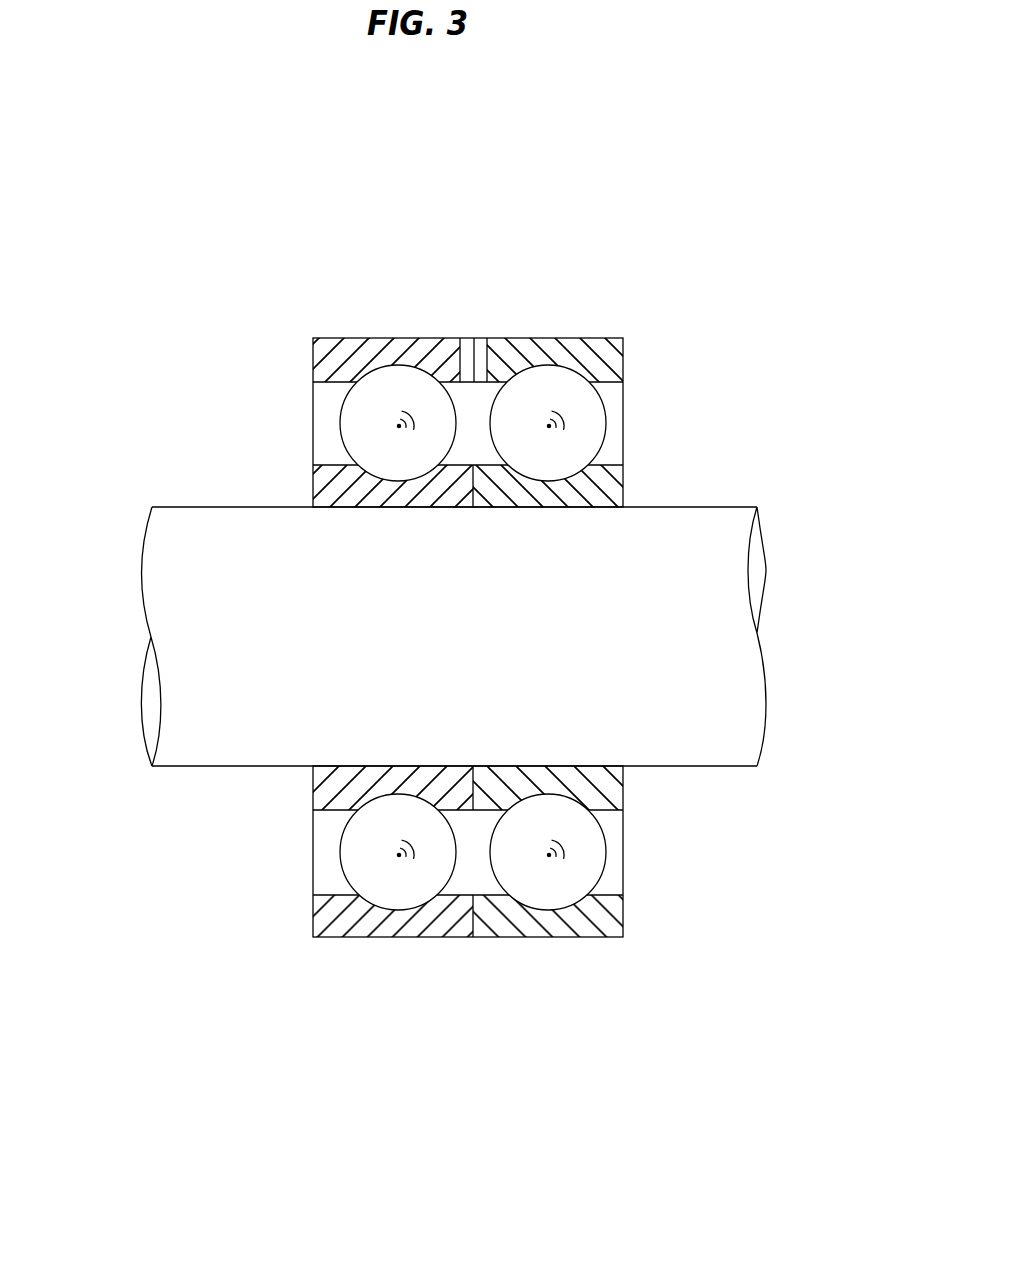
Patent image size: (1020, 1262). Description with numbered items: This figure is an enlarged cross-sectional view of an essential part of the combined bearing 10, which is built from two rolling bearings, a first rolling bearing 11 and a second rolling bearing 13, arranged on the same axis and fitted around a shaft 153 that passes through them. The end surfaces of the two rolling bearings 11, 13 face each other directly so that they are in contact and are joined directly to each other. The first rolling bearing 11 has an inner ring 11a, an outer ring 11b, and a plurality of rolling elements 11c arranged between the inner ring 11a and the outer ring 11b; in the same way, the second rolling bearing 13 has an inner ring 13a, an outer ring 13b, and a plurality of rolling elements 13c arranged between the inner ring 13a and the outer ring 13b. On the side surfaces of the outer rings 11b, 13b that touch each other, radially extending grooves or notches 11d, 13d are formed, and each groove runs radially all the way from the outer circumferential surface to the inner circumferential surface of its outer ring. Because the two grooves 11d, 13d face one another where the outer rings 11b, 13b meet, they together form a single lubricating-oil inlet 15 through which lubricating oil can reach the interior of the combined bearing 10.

The combined bearing 10 is at (644, 222).
The shaft 153 is at (177, 503).
The first rolling bearing 11 is at (270, 688).
The inner ring 11a is at (325, 793).
The outer ring 11b is at (320, 918).
The rolling elements 11c is at (358, 856).
The groove 11d is at (457, 362).
The second rolling bearing 13 is at (671, 688).
The inner ring 13a is at (615, 793).
The outer ring 13b is at (622, 918).
The rolling elements 13c is at (588, 856).
The groove 13d is at (487, 360).
The lubricating-oil inlet 15 is at (481, 348).